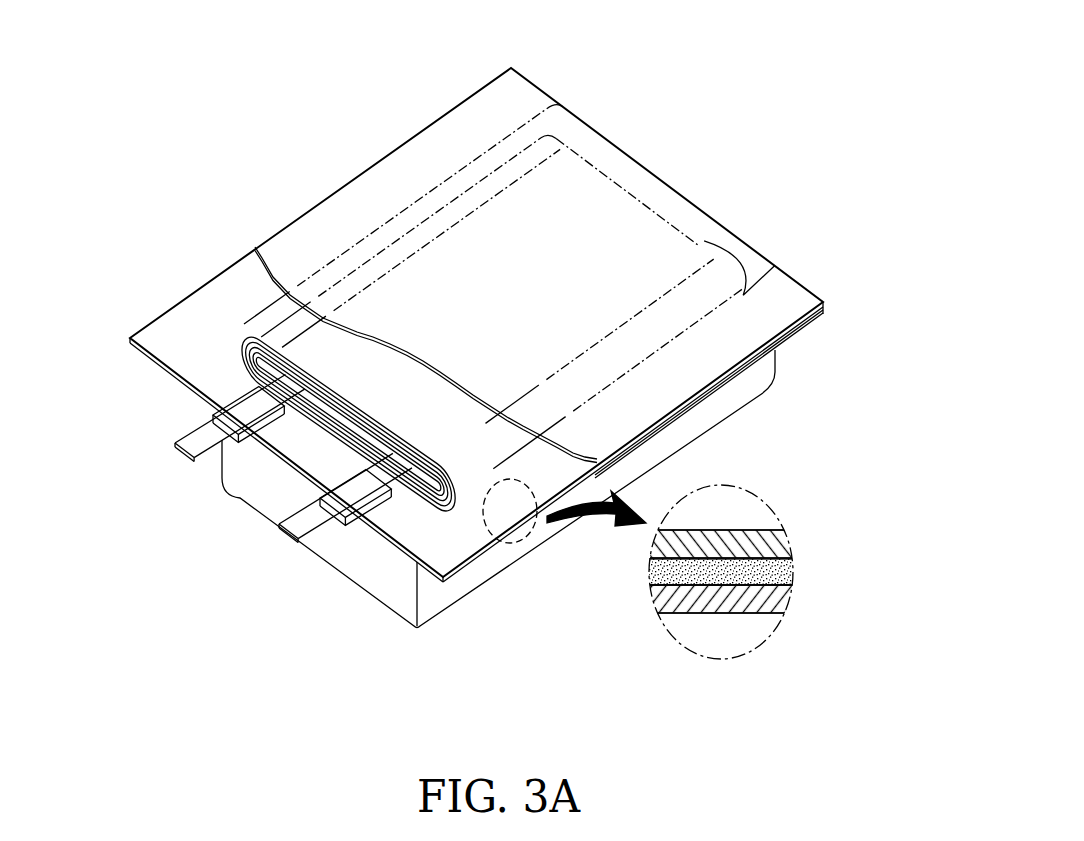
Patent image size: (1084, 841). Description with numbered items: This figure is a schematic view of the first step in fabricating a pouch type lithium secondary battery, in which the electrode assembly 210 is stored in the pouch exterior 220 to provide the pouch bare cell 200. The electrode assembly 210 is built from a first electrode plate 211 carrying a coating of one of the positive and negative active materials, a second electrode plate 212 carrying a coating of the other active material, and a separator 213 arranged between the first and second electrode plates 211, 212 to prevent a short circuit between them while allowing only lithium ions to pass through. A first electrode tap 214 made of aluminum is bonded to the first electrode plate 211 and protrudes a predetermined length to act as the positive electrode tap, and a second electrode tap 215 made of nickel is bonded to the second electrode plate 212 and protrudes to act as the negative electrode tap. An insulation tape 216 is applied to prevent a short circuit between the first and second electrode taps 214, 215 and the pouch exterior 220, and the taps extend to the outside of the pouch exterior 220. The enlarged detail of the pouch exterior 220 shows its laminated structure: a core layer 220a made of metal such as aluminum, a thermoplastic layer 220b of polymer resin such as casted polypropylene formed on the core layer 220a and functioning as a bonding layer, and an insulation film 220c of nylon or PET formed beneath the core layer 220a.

The pouch bare cell 200 is at (496, 341).
The electrode assembly 210 is at (264, 365).
The first electrode plate 211 is at (232, 336).
The second electrode plate 212 is at (240, 362).
The separator 213 is at (237, 349).
The first electrode tap 214 is at (176, 444).
The second electrode tap 215 is at (285, 518).
The insulation tape 216 is at (214, 397).
The pouch exterior 220 is at (526, 92).
The core layer 220a is at (783, 568).
The thermoplastic layer 220b is at (785, 547).
The insulation film 220c is at (783, 600).